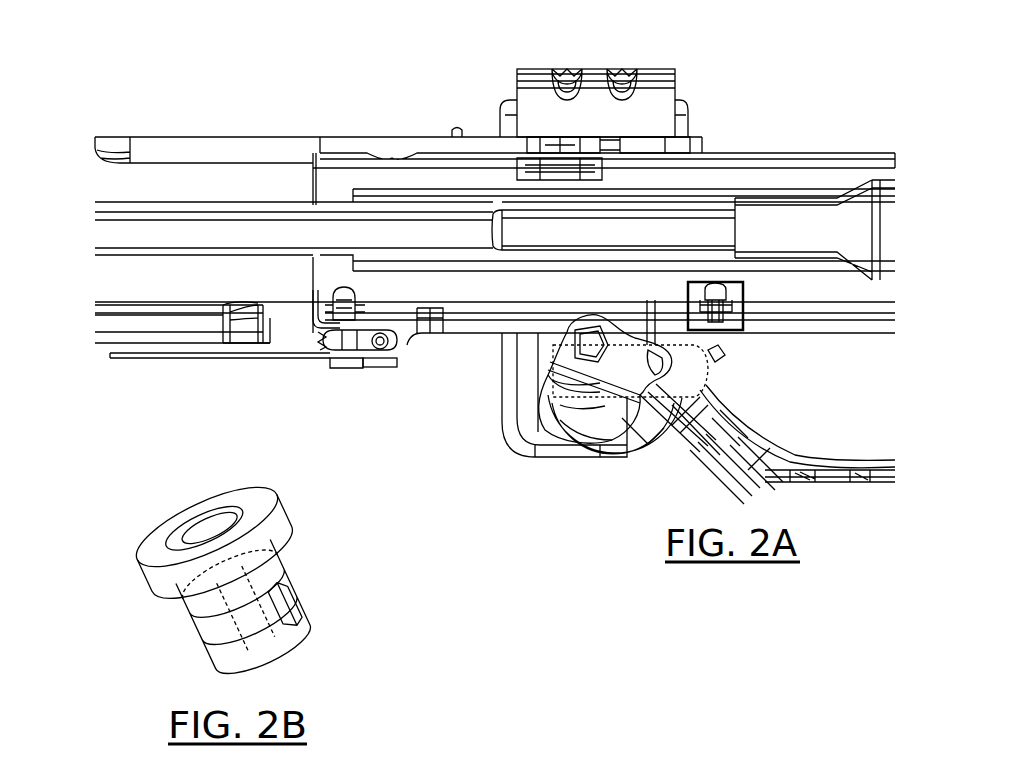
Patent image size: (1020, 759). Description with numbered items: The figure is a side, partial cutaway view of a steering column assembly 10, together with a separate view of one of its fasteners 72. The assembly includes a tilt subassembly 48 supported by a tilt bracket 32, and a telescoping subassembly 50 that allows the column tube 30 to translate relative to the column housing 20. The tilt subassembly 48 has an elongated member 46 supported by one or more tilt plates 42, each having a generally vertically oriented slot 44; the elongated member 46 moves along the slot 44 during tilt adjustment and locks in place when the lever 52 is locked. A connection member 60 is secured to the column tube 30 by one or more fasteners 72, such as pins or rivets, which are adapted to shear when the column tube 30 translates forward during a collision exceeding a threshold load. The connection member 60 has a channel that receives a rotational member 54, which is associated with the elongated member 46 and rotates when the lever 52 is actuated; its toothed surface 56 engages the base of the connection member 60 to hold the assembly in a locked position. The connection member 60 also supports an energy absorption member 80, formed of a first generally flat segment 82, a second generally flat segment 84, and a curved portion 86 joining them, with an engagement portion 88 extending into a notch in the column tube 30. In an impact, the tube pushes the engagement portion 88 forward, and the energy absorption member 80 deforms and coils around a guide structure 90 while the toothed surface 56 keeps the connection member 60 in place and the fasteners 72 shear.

In FIG. 2A, the steering column assembly 10 is at (112, 93).
In FIG. 2A, the column housing 20 is at (193, 145).
In FIG. 2A, the column tube 30 is at (845, 150).
In FIG. 2A, the tilt bracket 32 is at (680, 85).
In FIG. 2A, the tilt plate 42 is at (540, 428).
In FIG. 2A, the slot 44 is at (586, 412).
In FIG. 2A, the elongated member 46 is at (613, 230).
In FIG. 2A, the tilt subassembly 48 is at (520, 50).
In FIG. 2A, the telescoping subassembly 50 is at (740, 363).
In FIG. 2A, the lever 52 is at (773, 466).
In FIG. 2A, the rotational member 54 is at (680, 465).
In FIG. 2A, the toothed surface 56 is at (613, 320).
In FIG. 2A, the connection member 60 is at (463, 337).
In FIG. 2A, the fastener 72 is at (743, 308).
In FIG. 2B, the fastener 72 is at (158, 636).
In FIG. 2A, the energy absorption member 80 is at (146, 362).
In FIG. 2A, the first generally flat segment 82 is at (210, 357).
In FIG. 2A, the second generally flat segment 84 is at (345, 335).
In FIG. 2A, the curved portion 86 is at (398, 352).
In FIG. 2A, the engagement portion 88 is at (320, 320).
In FIG. 2A, the guide structure 90 is at (380, 360).